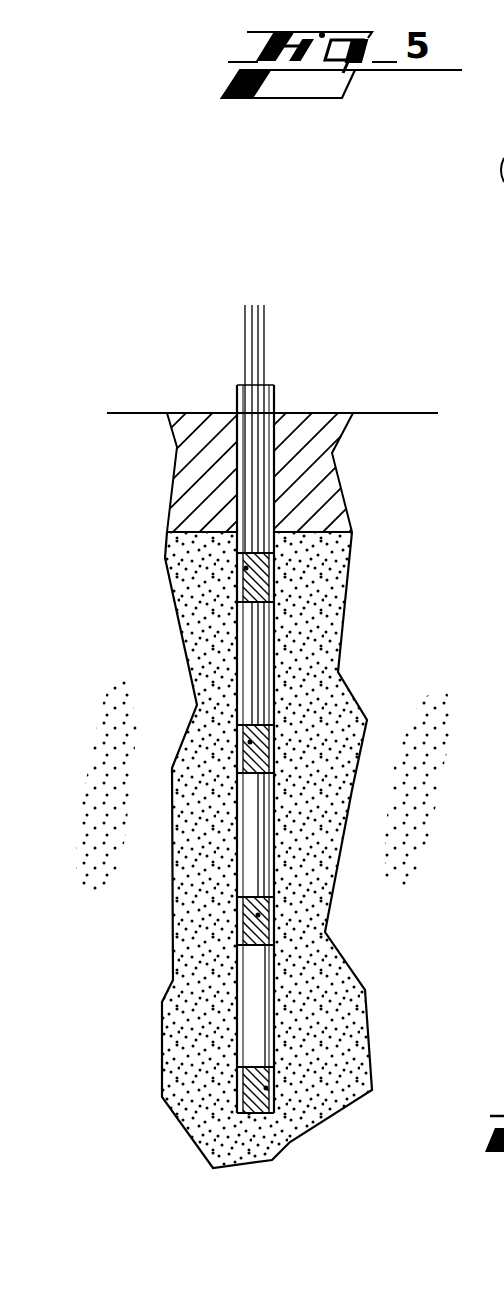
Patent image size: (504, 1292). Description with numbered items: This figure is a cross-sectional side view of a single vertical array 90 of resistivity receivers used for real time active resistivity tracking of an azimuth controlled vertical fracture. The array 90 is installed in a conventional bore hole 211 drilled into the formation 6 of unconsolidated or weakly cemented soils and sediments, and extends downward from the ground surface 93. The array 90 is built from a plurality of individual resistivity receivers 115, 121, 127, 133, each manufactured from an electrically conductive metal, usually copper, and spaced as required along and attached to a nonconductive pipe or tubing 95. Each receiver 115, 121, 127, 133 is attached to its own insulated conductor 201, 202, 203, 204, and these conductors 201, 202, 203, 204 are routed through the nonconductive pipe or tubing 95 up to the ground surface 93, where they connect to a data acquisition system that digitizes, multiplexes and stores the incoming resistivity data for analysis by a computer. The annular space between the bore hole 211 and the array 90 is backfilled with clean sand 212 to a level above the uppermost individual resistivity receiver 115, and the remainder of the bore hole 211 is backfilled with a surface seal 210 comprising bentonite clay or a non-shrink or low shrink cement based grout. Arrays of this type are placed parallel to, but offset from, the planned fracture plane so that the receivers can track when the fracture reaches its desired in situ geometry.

The formation 6 is at (64, 838).
The vertical array of resistivity receivers 90 is at (267, 382).
The ground surface 93 is at (128, 413).
The nonconductive pipe or tubing 95 is at (243, 838).
The resistivity receiver 115 is at (277, 582).
The resistivity receiver 121 is at (240, 758).
The resistivity receiver 127 is at (275, 933).
The resistivity receiver 133 is at (280, 1117).
The insulated conductor 201 is at (263, 1003).
The insulated conductor 202 is at (257, 878).
The insulated conductor 203 is at (252, 645).
The insulated conductor 204 is at (237, 547).
The surface seal 210 is at (312, 470).
The bore hole 211 is at (343, 653).
The clean sand 212 is at (307, 872).